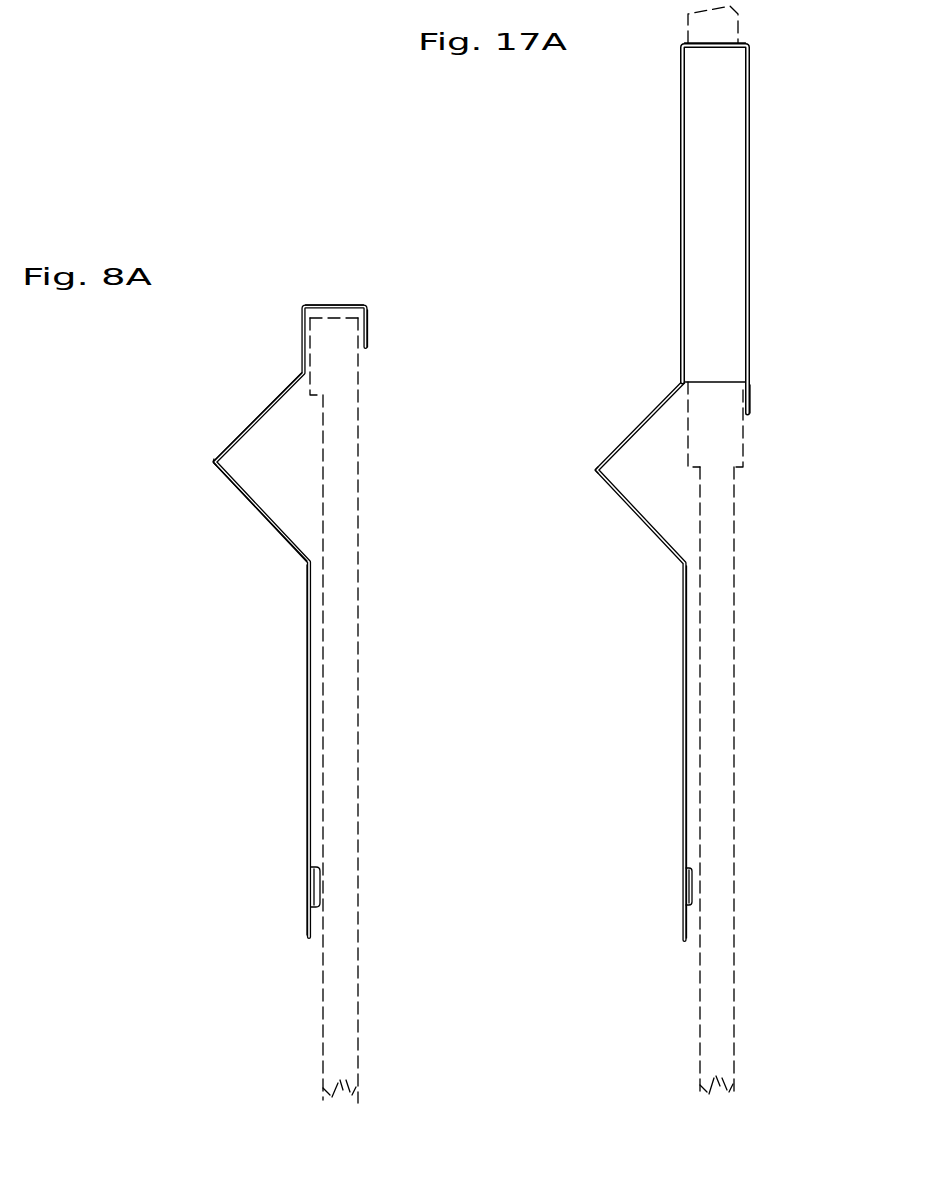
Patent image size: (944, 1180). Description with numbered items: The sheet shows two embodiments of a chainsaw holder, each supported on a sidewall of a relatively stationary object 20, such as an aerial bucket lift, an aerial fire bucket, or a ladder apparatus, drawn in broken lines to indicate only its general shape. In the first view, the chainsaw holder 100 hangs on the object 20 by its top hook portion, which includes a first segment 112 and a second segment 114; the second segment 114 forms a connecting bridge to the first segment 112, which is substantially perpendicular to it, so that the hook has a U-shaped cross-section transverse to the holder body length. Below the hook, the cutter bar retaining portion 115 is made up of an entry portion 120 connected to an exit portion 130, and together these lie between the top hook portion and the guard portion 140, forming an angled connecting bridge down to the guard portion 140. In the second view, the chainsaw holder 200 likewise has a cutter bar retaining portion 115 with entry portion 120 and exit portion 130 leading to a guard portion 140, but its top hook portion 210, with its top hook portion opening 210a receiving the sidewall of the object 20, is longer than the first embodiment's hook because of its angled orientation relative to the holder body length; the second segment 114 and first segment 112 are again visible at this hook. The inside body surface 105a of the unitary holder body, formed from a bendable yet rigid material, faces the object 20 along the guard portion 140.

In FIG. 8A, the stationary object 20 is at (358, 668).
In FIG. 17A, the stationary object 20 is at (734, 632).
In FIG. 8A, the chainsaw holder 100 is at (222, 822).
In FIG. 8A, the first segment 112 is at (370, 328).
In FIG. 17A, the first segment 112 is at (750, 393).
In FIG. 8A, the second segment 114 is at (333, 306).
In FIG. 17A, the second segment 114 is at (715, 103).
In FIG. 8A, the cutter bar retaining portion 115 is at (215, 458).
In FIG. 17A, the cutter bar retaining portion 115 is at (612, 497).
In FIG. 8A, the entry portion 120 is at (267, 410).
In FIG. 8A, the exit portion 130 is at (273, 529).
In FIG. 8A, the guard portion 140 is at (309, 748).
In FIG. 17A, the chainsaw holder 200 is at (630, 715).
In FIG. 17A, the top hook portion 210 is at (750, 147).
In FIG. 17A, the top hook portion opening 210a is at (723, 403).
In FIG. 17A, the inside body surface 105a is at (686, 690).